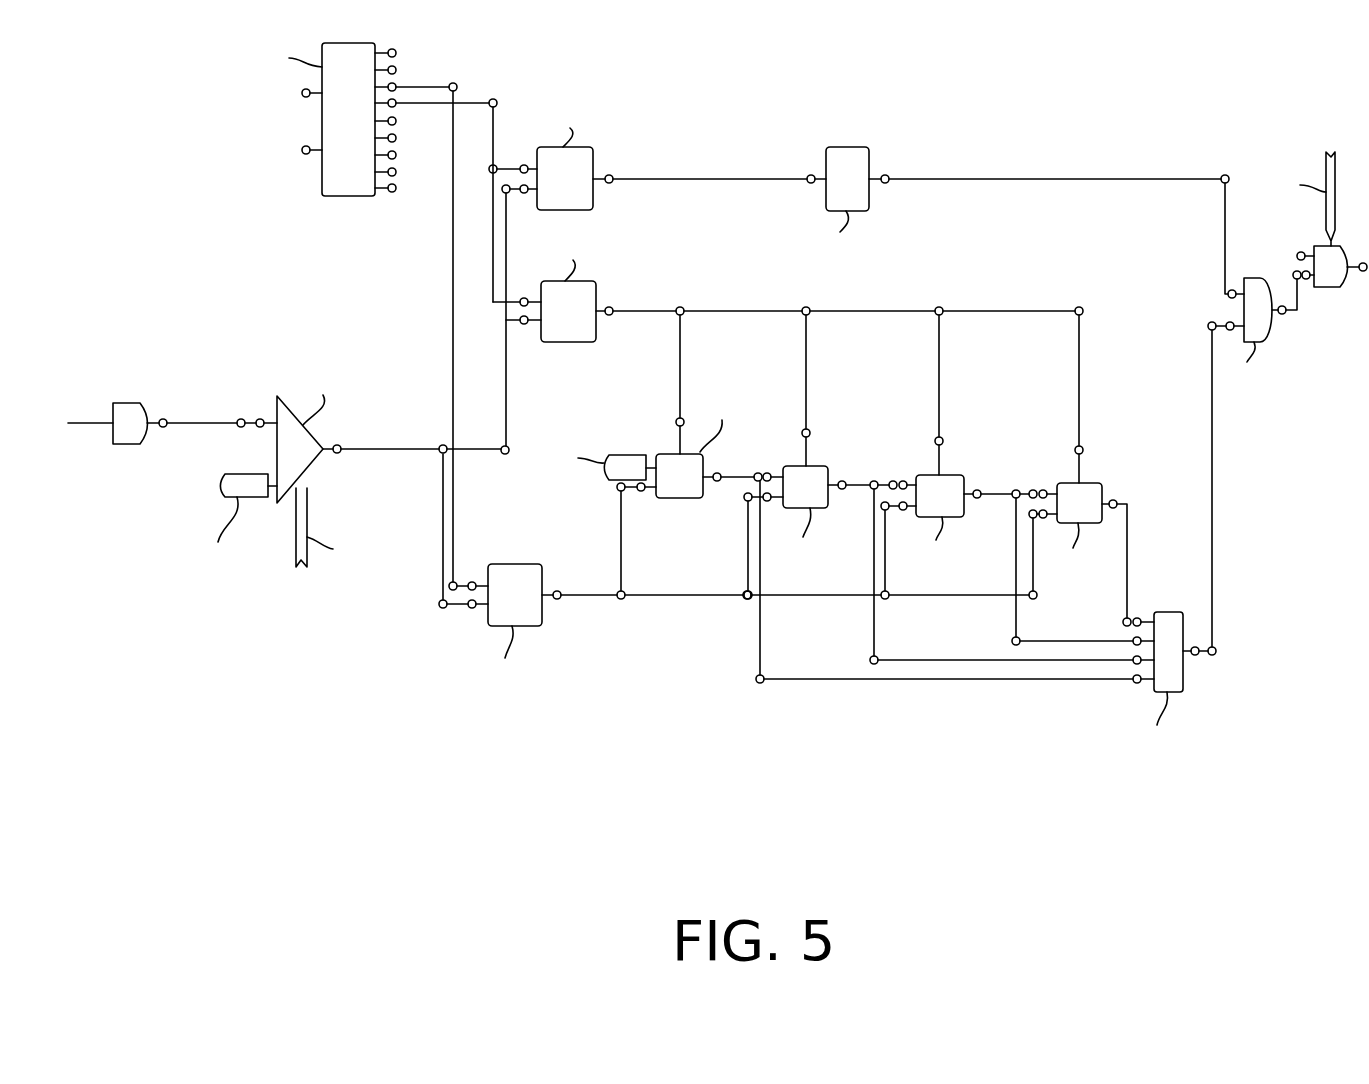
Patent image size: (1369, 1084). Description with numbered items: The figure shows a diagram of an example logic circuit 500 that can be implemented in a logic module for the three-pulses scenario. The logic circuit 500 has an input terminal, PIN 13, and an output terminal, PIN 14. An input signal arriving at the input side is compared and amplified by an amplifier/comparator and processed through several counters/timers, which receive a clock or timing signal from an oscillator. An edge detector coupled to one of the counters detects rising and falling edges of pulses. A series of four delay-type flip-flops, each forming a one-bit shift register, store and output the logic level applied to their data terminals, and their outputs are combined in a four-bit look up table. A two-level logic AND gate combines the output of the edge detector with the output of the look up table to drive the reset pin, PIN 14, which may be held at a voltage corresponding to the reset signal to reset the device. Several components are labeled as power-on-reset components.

The logic circuit 500 is at (700, 462).
The input terminal 13 is at (113, 408).
The output terminal 14 is at (1318, 246).